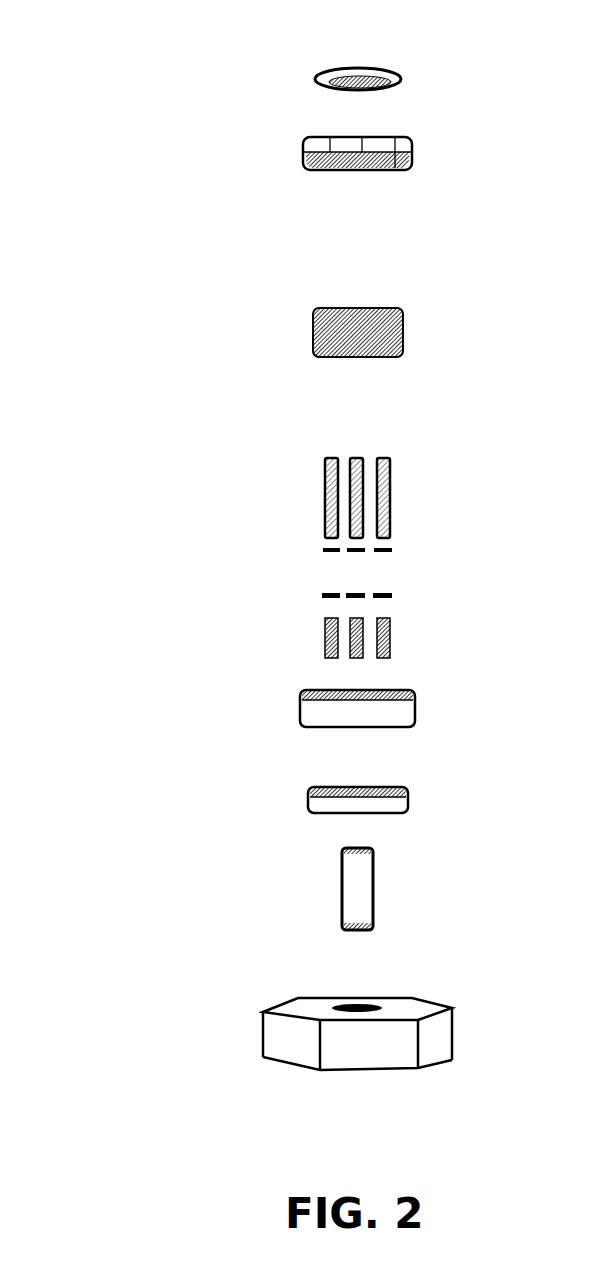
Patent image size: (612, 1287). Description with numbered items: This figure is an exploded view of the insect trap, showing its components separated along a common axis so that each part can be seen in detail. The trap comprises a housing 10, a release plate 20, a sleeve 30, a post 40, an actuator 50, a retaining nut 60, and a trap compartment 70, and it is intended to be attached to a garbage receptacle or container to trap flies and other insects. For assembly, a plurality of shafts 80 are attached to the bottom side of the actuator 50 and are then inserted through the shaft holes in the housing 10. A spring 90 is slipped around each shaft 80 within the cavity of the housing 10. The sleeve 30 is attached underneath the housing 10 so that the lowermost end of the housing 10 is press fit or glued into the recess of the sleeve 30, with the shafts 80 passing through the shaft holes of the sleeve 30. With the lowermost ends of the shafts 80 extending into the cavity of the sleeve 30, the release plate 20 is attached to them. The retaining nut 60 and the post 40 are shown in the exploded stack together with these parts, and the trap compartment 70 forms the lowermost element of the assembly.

The housing 10 is at (400, 314).
The release plate 20 is at (308, 800).
The sleeve 30 is at (302, 702).
The post 40 is at (352, 898).
The actuator 50 is at (383, 68).
The retaining nut 60 is at (397, 138).
The trap compartment 70 is at (275, 1035).
The shafts 80 is at (382, 491).
The springs 90 is at (382, 640).